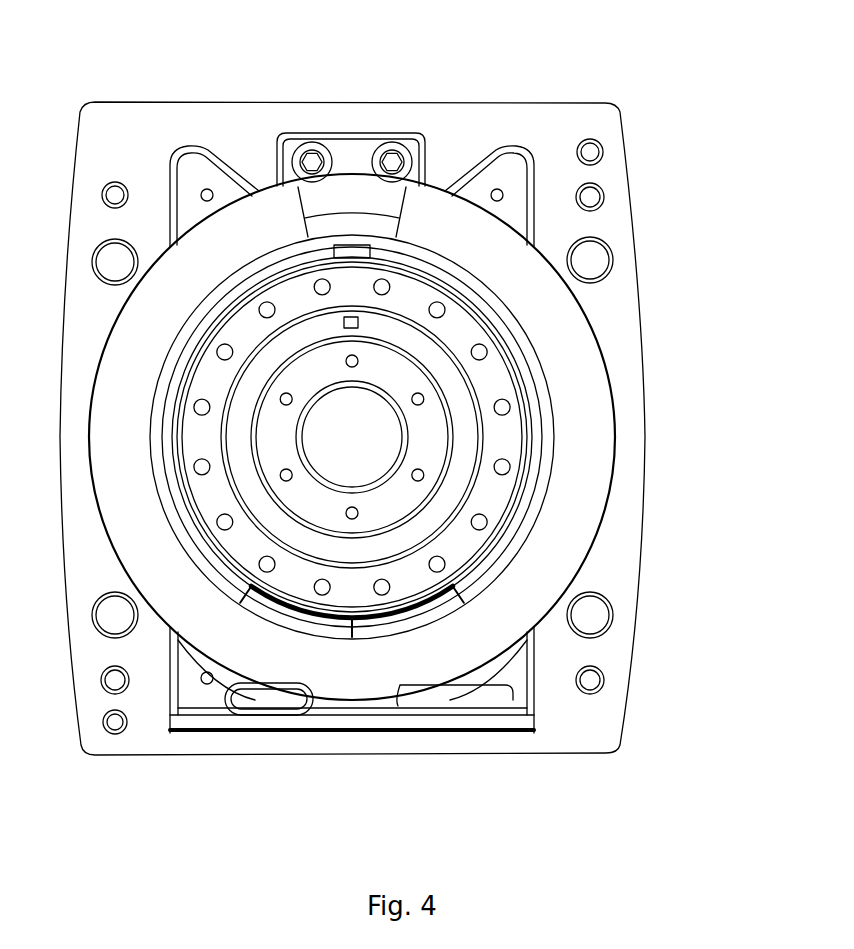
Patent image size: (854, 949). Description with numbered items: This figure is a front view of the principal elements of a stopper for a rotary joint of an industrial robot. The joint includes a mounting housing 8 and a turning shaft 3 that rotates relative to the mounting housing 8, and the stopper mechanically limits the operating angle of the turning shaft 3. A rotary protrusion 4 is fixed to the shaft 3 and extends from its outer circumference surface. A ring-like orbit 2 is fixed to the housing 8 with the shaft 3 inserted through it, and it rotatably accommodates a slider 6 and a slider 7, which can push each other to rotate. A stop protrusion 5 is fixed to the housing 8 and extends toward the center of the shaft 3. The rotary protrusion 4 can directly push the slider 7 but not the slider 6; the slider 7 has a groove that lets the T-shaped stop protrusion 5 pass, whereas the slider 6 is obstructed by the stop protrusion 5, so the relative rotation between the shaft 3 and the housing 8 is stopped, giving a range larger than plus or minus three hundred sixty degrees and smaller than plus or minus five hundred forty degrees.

The orbit 2 is at (512, 247).
The turning shaft 3 is at (477, 345).
The rotary protrusion 4 is at (350, 250).
The stop protrusion 5 is at (360, 183).
The slider 6 is at (320, 628).
The slider 7 is at (385, 623).
The mounting housing 8 is at (555, 660).